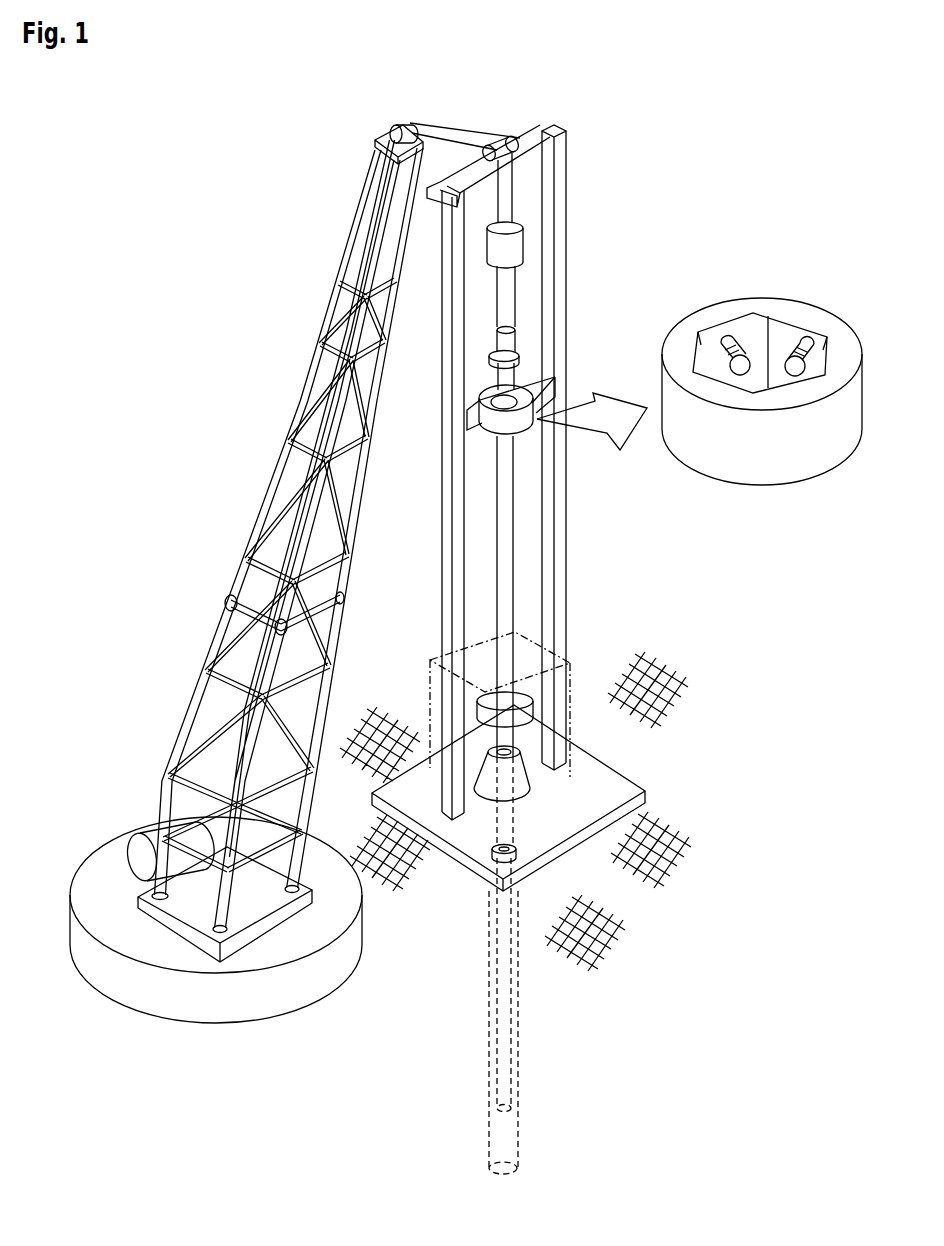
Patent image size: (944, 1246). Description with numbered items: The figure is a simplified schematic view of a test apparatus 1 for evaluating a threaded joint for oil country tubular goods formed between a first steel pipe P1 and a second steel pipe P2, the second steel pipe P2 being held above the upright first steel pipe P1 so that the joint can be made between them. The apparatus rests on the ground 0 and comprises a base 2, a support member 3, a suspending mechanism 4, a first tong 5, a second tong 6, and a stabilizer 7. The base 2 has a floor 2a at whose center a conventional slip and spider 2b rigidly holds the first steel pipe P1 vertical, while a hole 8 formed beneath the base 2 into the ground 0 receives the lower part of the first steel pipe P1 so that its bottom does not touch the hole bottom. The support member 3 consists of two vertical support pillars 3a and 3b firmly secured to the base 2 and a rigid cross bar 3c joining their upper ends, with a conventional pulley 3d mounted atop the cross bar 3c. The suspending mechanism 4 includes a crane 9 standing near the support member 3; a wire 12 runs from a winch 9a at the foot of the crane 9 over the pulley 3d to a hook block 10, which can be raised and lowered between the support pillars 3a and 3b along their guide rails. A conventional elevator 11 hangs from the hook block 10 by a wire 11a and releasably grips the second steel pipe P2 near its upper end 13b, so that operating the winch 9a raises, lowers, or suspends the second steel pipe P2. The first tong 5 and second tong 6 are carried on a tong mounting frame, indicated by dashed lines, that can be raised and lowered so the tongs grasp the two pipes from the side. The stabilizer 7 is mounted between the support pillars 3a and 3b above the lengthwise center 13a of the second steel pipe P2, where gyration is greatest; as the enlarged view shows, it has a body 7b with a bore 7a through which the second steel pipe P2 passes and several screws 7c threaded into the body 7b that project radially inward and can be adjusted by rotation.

The ground 0 is at (603, 883).
The test apparatus 1 is at (617, 614).
The base 2 is at (545, 798).
The floor 2a is at (603, 777).
The spider 2b is at (531, 793).
The support member 3 is at (512, 451).
The support pillar 3a is at (441, 512).
The support pillar 3b is at (566, 508).
The cross bar 3c is at (585, 100).
The pulley 3d is at (483, 152).
The suspending mechanism 4 is at (333, 526).
The first tong 5 is at (540, 737).
The second tong 6 is at (548, 698).
The stabilizer 7 is at (544, 365).
The bore 7a is at (752, 332).
The body 7b is at (817, 307).
The screws 7c is at (722, 355).
The hole 8 is at (518, 1007).
The crane 9 is at (278, 398).
The winch 9a is at (130, 855).
The hook block 10 is at (524, 258).
The elevator 11 is at (522, 363).
The wire 11a is at (491, 334).
The wire 12 is at (478, 131).
The lengthwise center 13a is at (513, 548).
The upper end 13b is at (504, 327).
The first steel pipe P1 is at (490, 830).
The second steel pipe P2 is at (513, 578).